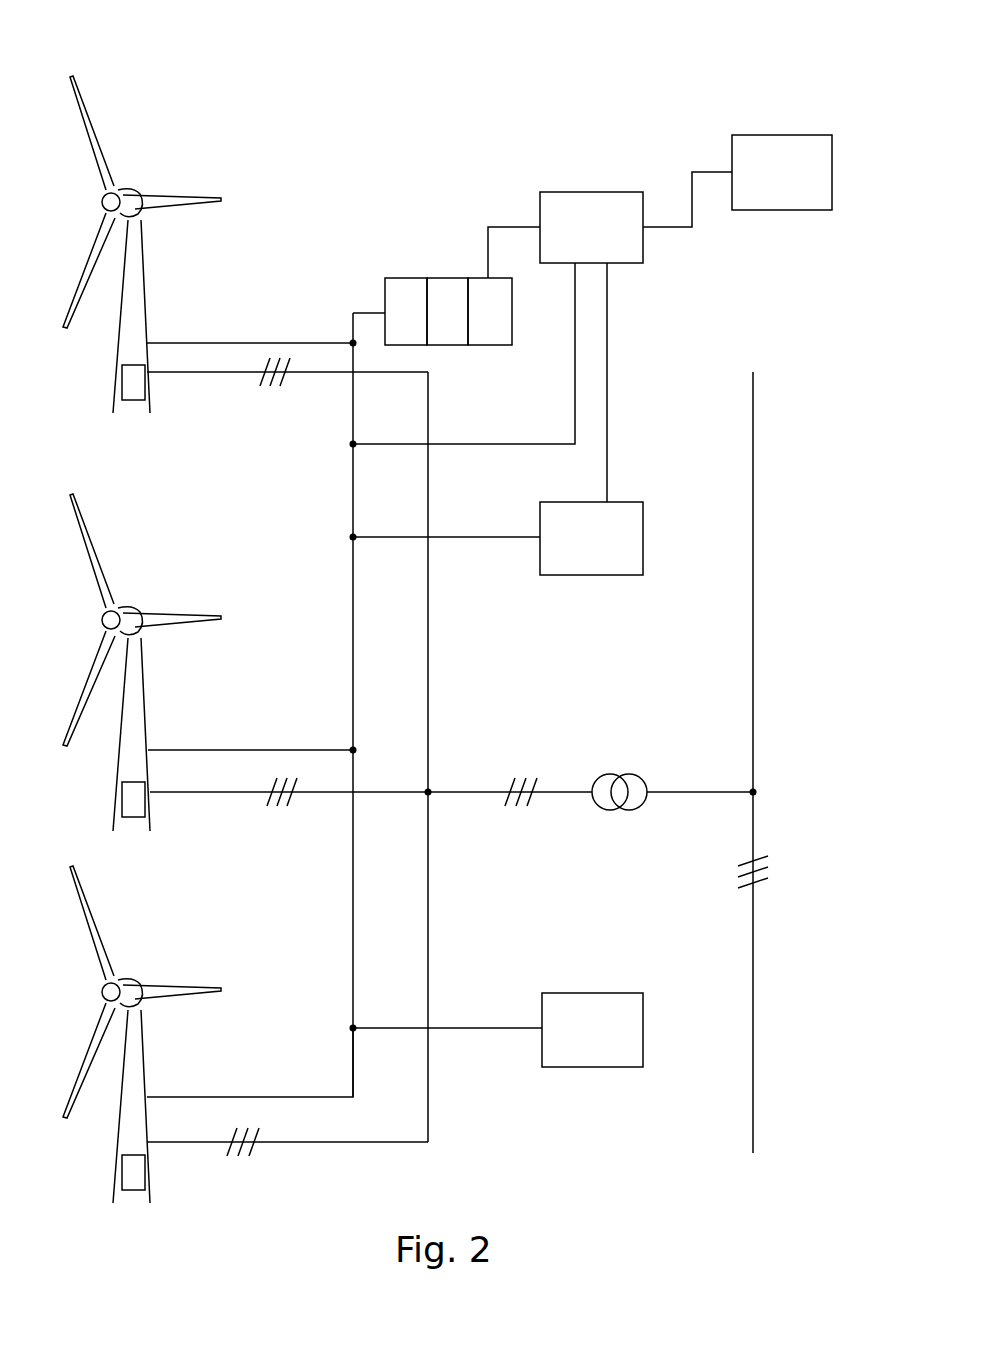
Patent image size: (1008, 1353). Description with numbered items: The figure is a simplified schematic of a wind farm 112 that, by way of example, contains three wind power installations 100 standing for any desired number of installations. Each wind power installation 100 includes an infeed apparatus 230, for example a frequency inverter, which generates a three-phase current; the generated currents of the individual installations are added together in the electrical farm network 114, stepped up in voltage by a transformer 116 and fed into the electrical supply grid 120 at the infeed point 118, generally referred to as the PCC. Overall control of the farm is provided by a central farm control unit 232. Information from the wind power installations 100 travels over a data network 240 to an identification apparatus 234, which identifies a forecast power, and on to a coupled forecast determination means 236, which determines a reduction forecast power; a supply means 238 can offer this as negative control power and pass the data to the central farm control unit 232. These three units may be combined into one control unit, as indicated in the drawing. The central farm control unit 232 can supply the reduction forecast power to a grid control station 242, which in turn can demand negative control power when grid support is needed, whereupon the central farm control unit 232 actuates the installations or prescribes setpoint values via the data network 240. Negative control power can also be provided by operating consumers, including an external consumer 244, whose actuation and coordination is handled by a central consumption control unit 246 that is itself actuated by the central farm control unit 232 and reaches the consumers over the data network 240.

The wind power installation 100 is at (137, 288).
The wind farm 112 is at (523, 135).
The electrical farm network 114 is at (450, 792).
The transformer 116 is at (620, 770).
The infeed point 118 is at (760, 778).
The electrical supply grid 120 is at (753, 405).
The infeed apparatus 230 is at (133, 403).
The central farm control unit 232 is at (623, 192).
The identification apparatus 234 is at (398, 273).
The forecast determination means 236 is at (437, 275).
The supply means 238 is at (482, 275).
The data network 240 is at (353, 568).
The grid control station 242 is at (767, 135).
The external consumer 244 is at (593, 993).
The central consumption control unit 246 is at (625, 502).